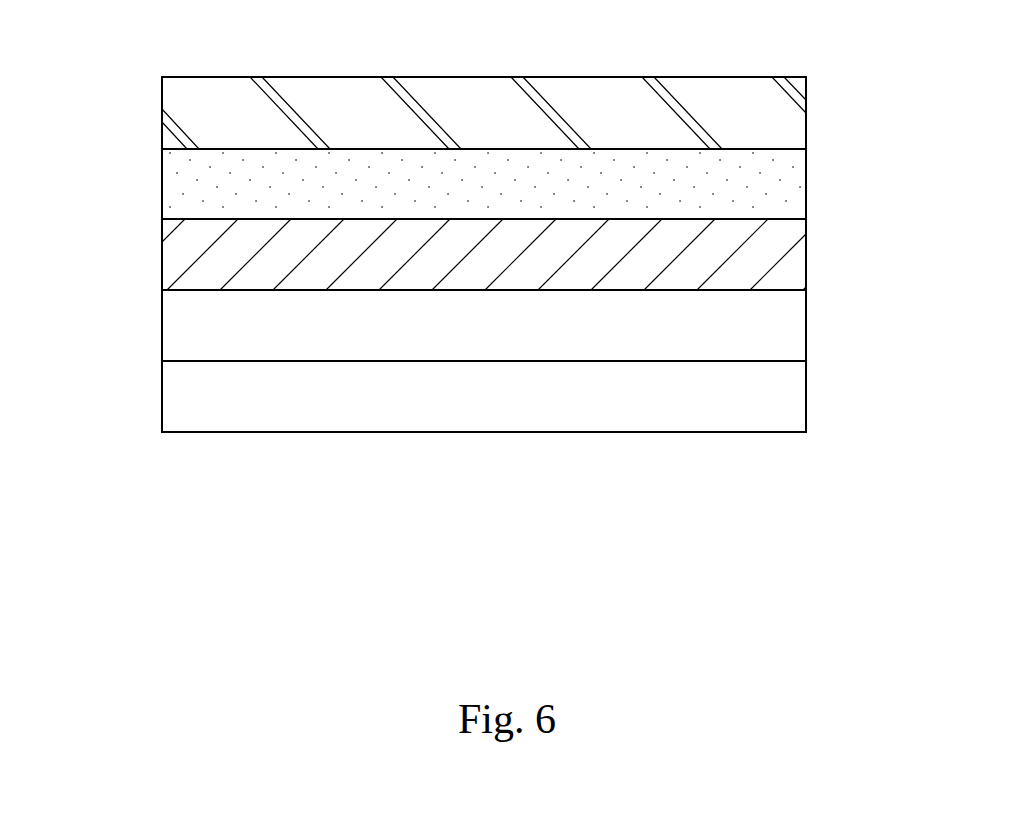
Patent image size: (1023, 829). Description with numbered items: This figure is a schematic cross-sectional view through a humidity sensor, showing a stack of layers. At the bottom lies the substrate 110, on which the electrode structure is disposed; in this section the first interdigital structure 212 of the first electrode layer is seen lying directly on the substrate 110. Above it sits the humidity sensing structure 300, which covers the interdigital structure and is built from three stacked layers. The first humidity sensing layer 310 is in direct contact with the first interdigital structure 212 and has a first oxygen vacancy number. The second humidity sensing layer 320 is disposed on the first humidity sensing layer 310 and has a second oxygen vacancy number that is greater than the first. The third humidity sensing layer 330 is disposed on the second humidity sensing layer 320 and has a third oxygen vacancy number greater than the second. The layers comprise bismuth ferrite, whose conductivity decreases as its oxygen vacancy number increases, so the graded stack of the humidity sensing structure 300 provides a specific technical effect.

The substrate 110 is at (792, 393).
The first interdigital structure 212 is at (792, 322).
The humidity sensing structure 300 is at (586, 183).
The first humidity sensing layer 310 is at (543, 254).
The second humidity sensing layer 320 is at (792, 189).
The third humidity sensing layer 330 is at (792, 122).